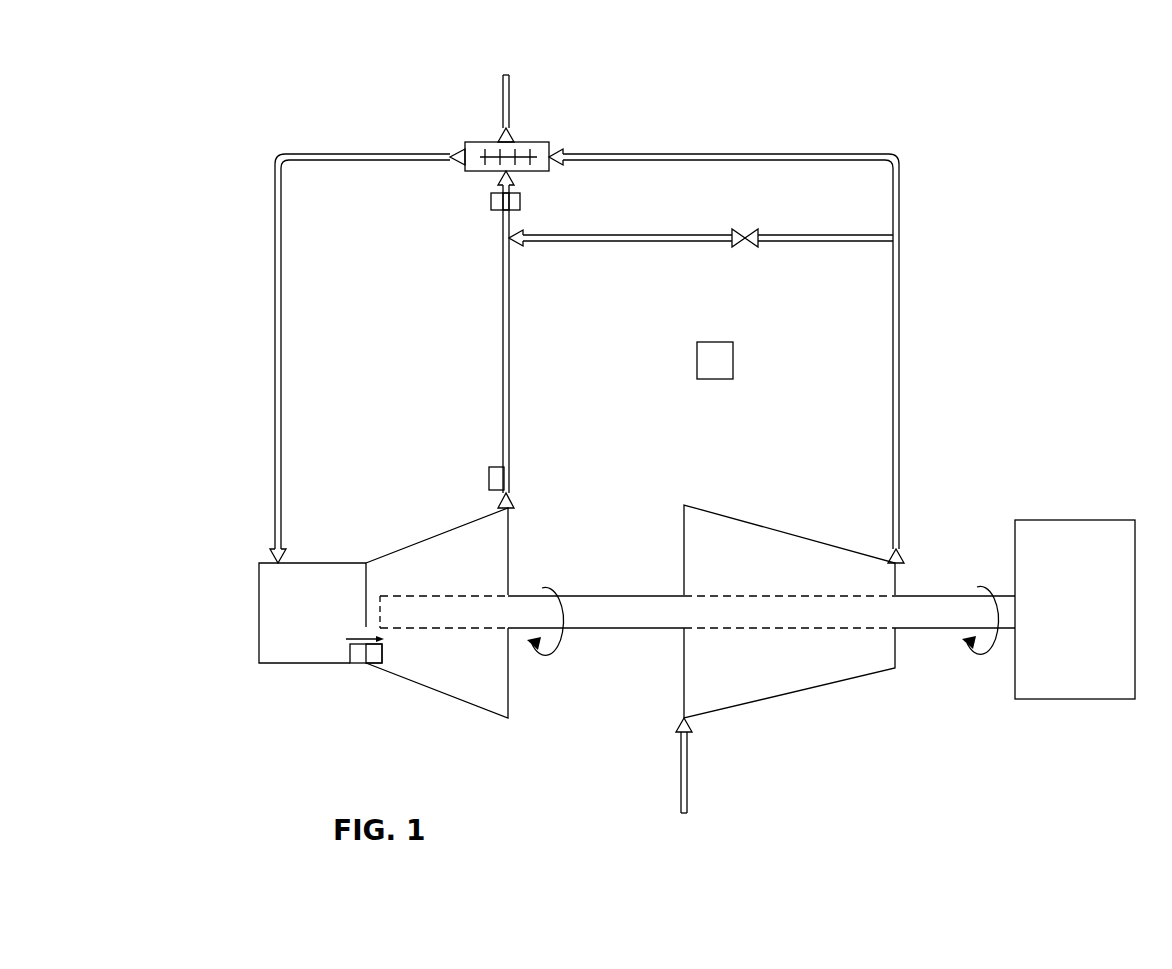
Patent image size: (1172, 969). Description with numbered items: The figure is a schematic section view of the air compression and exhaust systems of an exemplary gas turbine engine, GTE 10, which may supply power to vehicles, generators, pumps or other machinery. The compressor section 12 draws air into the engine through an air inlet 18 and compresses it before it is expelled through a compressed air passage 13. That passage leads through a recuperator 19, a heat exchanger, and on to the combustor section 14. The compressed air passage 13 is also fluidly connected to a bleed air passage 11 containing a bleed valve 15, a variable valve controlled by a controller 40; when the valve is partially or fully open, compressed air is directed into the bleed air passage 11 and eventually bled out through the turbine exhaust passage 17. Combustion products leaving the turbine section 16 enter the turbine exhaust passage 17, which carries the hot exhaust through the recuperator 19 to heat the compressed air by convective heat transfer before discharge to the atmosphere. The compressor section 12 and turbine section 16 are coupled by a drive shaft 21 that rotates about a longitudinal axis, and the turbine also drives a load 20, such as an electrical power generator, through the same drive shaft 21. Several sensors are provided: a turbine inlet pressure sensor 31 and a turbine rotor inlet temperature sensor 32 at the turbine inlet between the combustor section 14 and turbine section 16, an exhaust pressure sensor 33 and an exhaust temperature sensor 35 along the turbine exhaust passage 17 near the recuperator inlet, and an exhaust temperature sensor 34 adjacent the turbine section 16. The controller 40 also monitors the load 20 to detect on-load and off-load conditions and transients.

The gas turbine engine 10 is at (174, 130).
The bleed air passage 11 is at (822, 241).
The compressor section 12 is at (789, 611).
The compressed air passage 13 is at (275, 397).
The combustor section 14 is at (312, 613).
The bleed valve 15 is at (747, 229).
The turbine section 16 is at (437, 613).
The turbine exhaust passage 17 is at (503, 98).
The air inlet 18 is at (681, 778).
The recuperator 19 is at (532, 142).
The load 20 is at (1075, 609).
The drive shaft 21 is at (943, 595).
The turbine inlet pressure sensor 31 is at (350, 654).
The turbine rotor inlet temperature sensor 32 is at (382, 652).
The exhaust pressure sensor 33 is at (491, 203).
The exhaust temperature sensor 34 is at (489, 477).
The exhaust temperature sensor 35 is at (520, 203).
The controller 40 is at (733, 359).